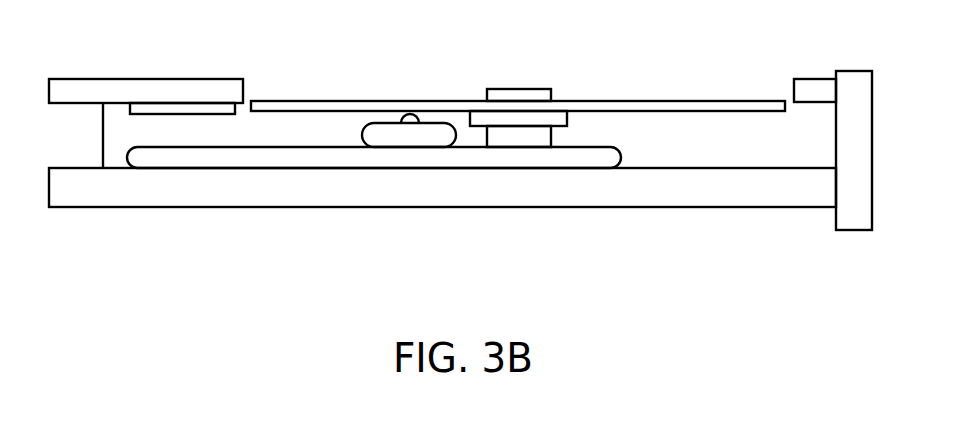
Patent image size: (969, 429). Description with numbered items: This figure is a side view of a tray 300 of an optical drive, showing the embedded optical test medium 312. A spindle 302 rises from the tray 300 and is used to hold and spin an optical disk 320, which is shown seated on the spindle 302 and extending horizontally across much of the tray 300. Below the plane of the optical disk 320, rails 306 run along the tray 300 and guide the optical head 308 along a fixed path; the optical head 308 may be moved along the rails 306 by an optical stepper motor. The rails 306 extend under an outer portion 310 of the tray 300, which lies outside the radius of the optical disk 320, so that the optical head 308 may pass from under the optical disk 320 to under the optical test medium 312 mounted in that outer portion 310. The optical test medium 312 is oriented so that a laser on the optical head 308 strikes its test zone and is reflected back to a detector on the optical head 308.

The tray 300 is at (482, 322).
The spindle 302 is at (518, 88).
The rails 306 is at (298, 145).
The optical head 308 is at (410, 137).
The outer portion 310 is at (237, 218).
The optical test medium 312 is at (188, 117).
The optical disk 320 is at (679, 101).